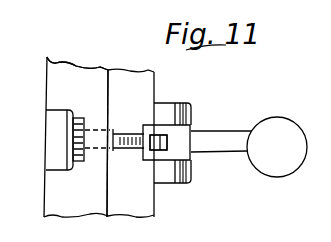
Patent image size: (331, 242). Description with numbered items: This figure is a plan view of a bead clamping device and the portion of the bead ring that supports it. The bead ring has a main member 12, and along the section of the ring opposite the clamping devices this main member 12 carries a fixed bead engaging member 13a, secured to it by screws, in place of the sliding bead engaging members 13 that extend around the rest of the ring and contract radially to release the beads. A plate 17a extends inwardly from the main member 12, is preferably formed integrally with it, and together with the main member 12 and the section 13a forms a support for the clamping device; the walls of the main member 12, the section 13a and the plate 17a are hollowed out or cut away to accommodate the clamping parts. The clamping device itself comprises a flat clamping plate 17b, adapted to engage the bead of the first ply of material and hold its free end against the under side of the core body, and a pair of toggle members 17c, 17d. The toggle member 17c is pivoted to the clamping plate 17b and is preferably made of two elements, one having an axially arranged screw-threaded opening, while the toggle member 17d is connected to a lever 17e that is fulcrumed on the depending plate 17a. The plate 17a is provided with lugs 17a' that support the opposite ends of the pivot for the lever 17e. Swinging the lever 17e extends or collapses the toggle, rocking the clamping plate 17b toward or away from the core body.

The main member 12 is at (128, 75).
The bead engaging member 13 is at (76, 137).
The bead engaging member 13a is at (63, 75).
The plate 17a is at (166, 142).
The lug 17a' is at (174, 148).
The clamping plate 17b is at (47, 147).
The toggle member 17c is at (115, 137).
The toggle member 17d is at (161, 153).
The lever 17e is at (236, 139).